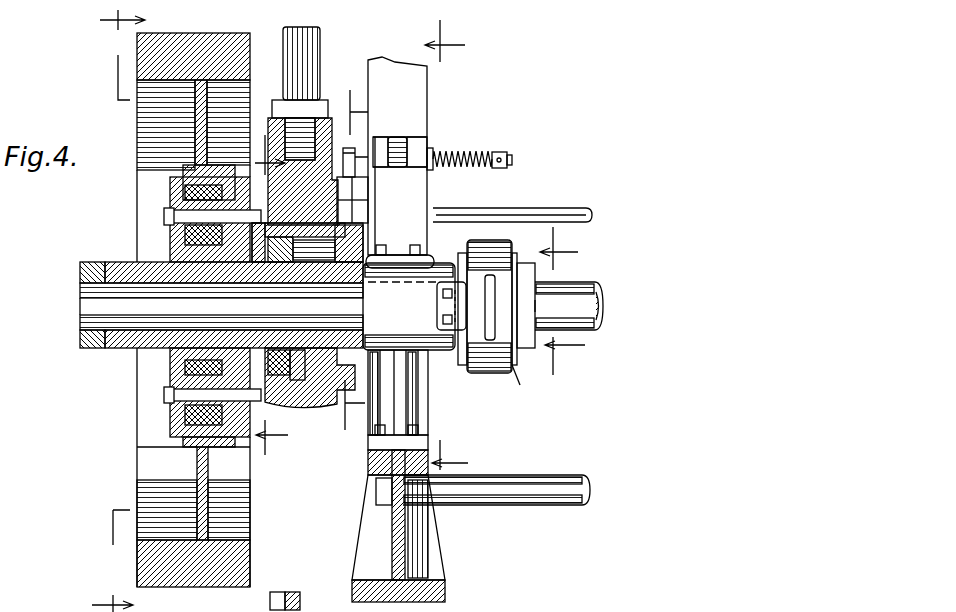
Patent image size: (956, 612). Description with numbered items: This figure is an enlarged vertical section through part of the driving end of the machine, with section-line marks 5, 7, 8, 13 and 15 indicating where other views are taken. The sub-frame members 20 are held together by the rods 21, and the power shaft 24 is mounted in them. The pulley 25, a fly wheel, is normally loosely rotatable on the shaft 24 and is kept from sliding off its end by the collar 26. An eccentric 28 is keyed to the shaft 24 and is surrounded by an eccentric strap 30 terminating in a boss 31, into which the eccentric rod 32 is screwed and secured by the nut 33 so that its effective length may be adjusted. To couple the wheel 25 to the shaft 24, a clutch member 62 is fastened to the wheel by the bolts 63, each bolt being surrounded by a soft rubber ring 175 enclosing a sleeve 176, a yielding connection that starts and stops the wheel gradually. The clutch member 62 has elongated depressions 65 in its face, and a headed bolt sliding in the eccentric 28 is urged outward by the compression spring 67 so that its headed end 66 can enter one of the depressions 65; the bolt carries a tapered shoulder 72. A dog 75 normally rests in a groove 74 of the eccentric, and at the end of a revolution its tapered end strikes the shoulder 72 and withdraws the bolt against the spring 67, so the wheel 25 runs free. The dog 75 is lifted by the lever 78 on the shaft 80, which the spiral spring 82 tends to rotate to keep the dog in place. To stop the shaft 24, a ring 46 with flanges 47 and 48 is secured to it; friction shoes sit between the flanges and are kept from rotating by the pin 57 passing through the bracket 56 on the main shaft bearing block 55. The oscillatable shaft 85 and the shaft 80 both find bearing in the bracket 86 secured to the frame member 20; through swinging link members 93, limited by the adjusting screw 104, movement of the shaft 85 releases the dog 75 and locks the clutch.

The sub-frame member 20 is at (426, 88).
The rod 21 is at (536, 480).
The power shaft 24 is at (85, 303).
The pulley 25 is at (160, 55).
The collar 26 is at (82, 352).
The eccentric 28 is at (262, 284).
The eccentric strap 30 is at (326, 410).
The boss 31 is at (325, 122).
The eccentric rod 32 is at (322, 35).
The nut 33 is at (306, 105).
The ring 46 is at (528, 290).
The flange 47 is at (462, 368).
The flange 48 is at (521, 378).
The main shaft bearing block 55 is at (409, 306).
The bracket 56 is at (437, 310).
The pin 57 is at (522, 308).
The clutch member 62 is at (245, 440).
The bolt 63 is at (178, 195).
The depression 65 is at (280, 258).
The headed end 66 is at (305, 262).
The compression spring 67 is at (352, 200).
The shoulder 72 is at (372, 222).
The groove 74 is at (412, 396).
The dog 75 is at (352, 206).
The lever 78 is at (353, 162).
The shaft 80 is at (512, 160).
The spiral spring 82 is at (470, 150).
The oscillatable shaft 85 is at (540, 210).
The bracket 86 is at (398, 140).
The swinging link member 93 is at (382, 137).
The adjusting screw 104 is at (300, 603).
The rubber ring 175 is at (172, 370).
The sleeve 176 is at (172, 385).
The section line 5 is at (356, 259).
The section line 7 is at (269, 295).
The section line 8 is at (118, 311).
The section line 13 is at (448, 244).
The section line 15 is at (562, 301).